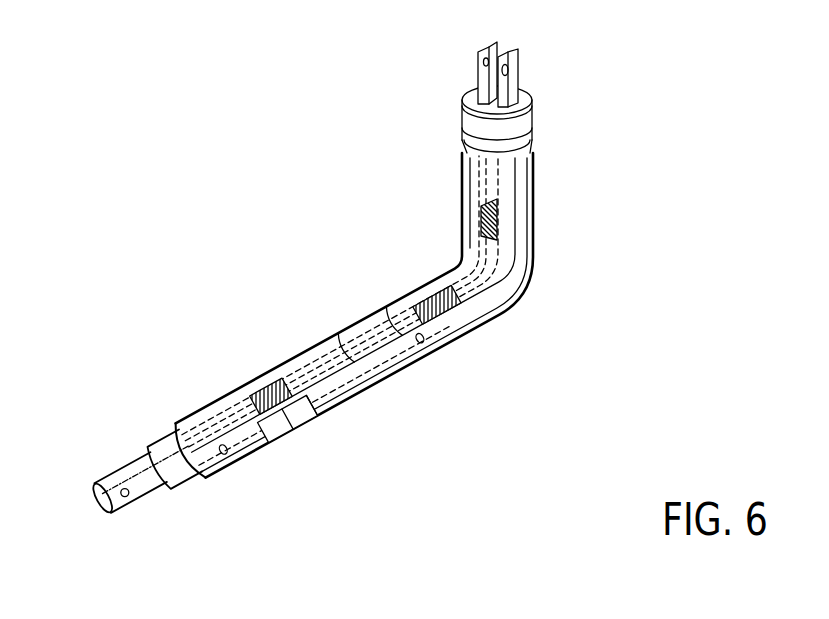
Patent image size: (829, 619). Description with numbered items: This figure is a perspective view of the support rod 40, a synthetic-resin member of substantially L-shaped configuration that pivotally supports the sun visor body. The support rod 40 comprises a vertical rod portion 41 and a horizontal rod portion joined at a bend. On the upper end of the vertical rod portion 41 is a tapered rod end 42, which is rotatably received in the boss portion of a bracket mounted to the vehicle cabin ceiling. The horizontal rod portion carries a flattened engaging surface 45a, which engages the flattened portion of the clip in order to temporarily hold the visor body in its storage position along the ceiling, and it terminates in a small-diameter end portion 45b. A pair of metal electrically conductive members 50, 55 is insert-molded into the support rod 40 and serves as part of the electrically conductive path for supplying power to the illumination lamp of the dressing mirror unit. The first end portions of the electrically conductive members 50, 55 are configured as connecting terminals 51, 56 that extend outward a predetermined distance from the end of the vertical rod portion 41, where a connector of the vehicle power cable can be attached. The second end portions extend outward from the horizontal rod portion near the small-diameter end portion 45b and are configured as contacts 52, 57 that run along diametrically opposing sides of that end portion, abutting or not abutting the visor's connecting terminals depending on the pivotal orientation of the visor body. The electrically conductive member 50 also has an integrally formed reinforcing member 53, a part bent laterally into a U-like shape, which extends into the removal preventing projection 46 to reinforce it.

The support rod 40 is at (417, 282).
The vertical rod portion 41 is at (528, 217).
The tapered rod end 42 is at (533, 163).
The flattened engaging surface 45a is at (355, 328).
The small-diameter end portion 45b is at (143, 458).
The removal preventing projection 46 is at (278, 438).
The electrically conductive member 50 is at (381, 353).
The connecting terminal 51 is at (518, 82).
The contact 52 is at (150, 490).
The reinforcing member 53 is at (303, 422).
The electrically conductive member 55 is at (300, 353).
The connecting terminal 56 is at (477, 75).
The contact 57 is at (128, 462).